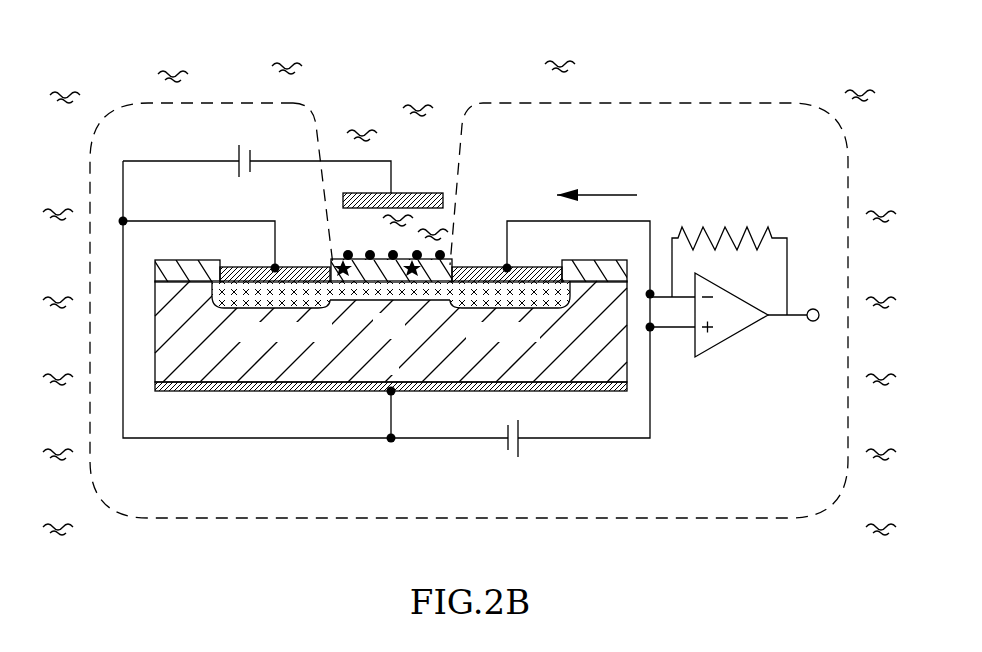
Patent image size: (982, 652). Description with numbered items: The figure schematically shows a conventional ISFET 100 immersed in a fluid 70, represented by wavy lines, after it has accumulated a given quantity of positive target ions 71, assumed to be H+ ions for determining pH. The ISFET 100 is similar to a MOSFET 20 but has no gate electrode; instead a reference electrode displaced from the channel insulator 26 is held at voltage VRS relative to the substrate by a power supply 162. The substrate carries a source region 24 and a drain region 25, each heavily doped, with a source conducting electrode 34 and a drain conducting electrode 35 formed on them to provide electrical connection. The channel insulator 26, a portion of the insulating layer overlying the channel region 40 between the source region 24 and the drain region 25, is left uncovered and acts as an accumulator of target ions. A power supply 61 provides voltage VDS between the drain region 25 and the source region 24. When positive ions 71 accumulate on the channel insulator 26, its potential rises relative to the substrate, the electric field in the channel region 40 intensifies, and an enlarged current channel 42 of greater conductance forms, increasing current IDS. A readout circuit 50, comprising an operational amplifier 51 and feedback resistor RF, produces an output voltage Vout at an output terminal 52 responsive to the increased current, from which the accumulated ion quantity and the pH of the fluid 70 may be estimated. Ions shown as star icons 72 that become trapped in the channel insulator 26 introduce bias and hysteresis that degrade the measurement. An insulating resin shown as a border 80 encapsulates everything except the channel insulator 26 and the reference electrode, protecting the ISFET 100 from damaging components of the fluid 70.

The ISFET 100 is at (212, 48).
The insulating resin 80 is at (725, 103).
The fluid 70 is at (360, 133).
The positive target ions 71 is at (415, 257).
The trapped ions 72 is at (328, 260).
The channel insulator 26 is at (401, 252).
The source region 24 is at (243, 282).
The drain region 25 is at (487, 290).
The source conducting electrode 34 is at (297, 265).
The drain conducting electrode 35 is at (530, 266).
The MOSFET 20 is at (391, 378).
The channel region 40 is at (402, 336).
The current channel 42 is at (417, 300).
The power supply 162 is at (237, 168).
The power supply 61 is at (525, 446).
The readout circuit 50 is at (752, 356).
The operational amplifier 51 is at (722, 327).
The output terminal 52 is at (813, 309).